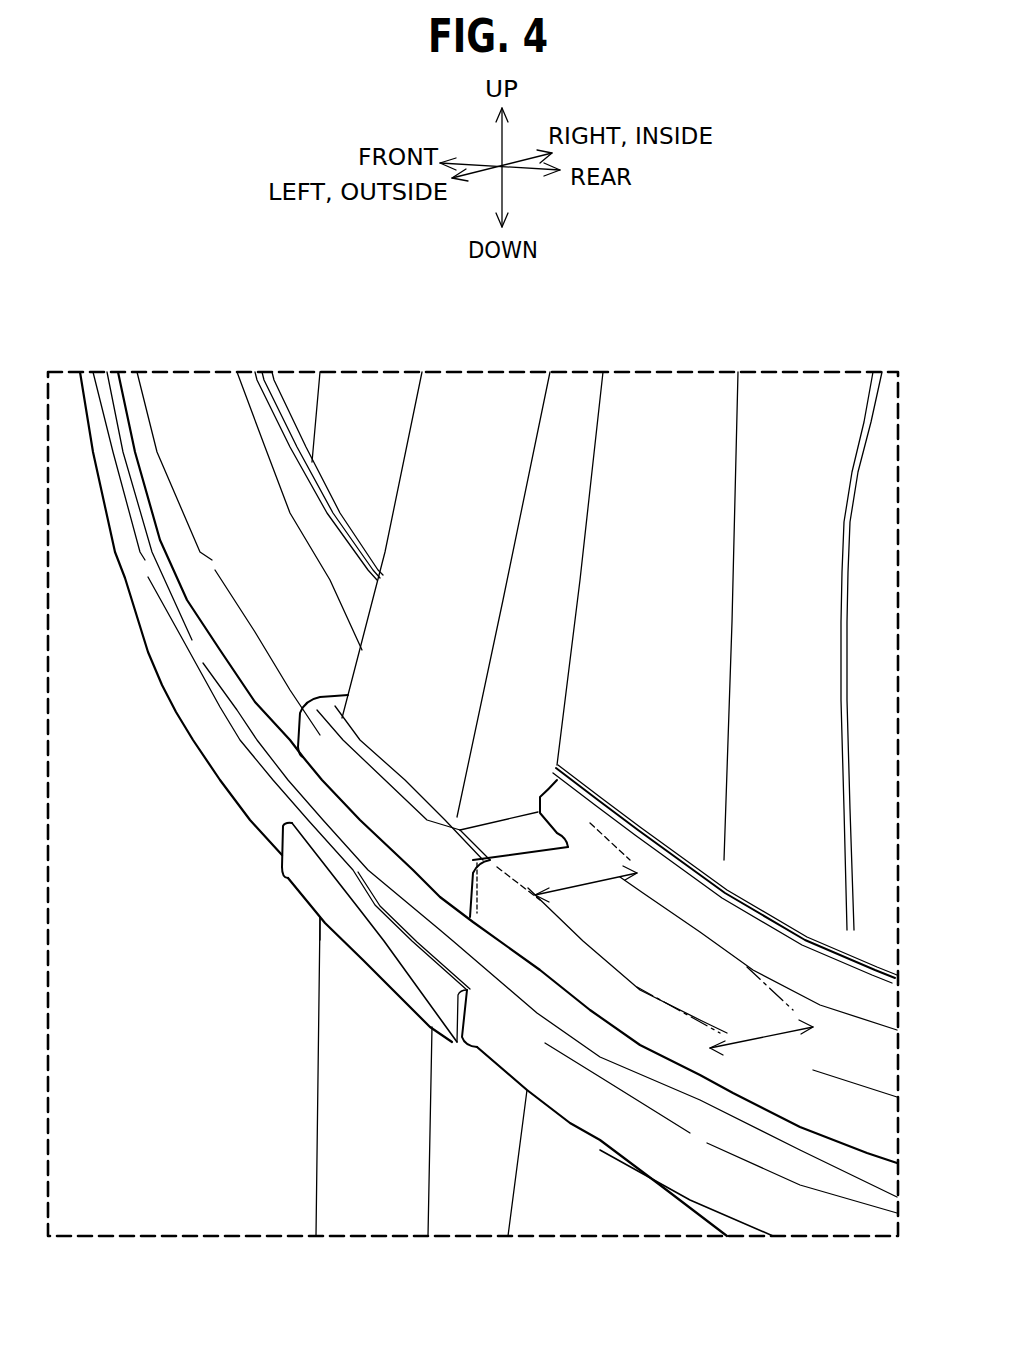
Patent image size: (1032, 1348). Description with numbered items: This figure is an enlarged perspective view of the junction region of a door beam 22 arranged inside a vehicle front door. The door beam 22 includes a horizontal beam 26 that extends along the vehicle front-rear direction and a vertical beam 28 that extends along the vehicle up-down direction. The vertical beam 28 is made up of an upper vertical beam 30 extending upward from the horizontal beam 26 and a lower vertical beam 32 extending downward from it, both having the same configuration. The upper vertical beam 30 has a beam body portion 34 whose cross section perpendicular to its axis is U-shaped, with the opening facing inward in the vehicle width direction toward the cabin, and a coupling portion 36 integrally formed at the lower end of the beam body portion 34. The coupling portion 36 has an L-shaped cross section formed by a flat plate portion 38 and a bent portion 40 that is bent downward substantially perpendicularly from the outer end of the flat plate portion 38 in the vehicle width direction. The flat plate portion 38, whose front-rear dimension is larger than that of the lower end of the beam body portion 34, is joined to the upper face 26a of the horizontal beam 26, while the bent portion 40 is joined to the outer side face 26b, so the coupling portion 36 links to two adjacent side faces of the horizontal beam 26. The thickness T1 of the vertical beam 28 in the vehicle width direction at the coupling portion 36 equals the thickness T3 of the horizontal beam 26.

The door beam 22 is at (278, 1012).
The horizontal beam 26 is at (178, 738).
The upper face 26a is at (687, 973).
The outer side face 26b is at (562, 1005).
The vertical beam 28 is at (588, 598).
The upper vertical beam 30 is at (478, 405).
The lower vertical beam 32 is at (383, 1208).
The beam body portion 34 is at (566, 475).
The coupling portion 36 is at (567, 820).
The flat plate portion 38 is at (553, 867).
The bent portion 40 is at (383, 830).
The thickness of the vertical beam at the coupling portion T1 is at (587, 887).
The thickness of the horizontal beam T3 is at (760, 1040).